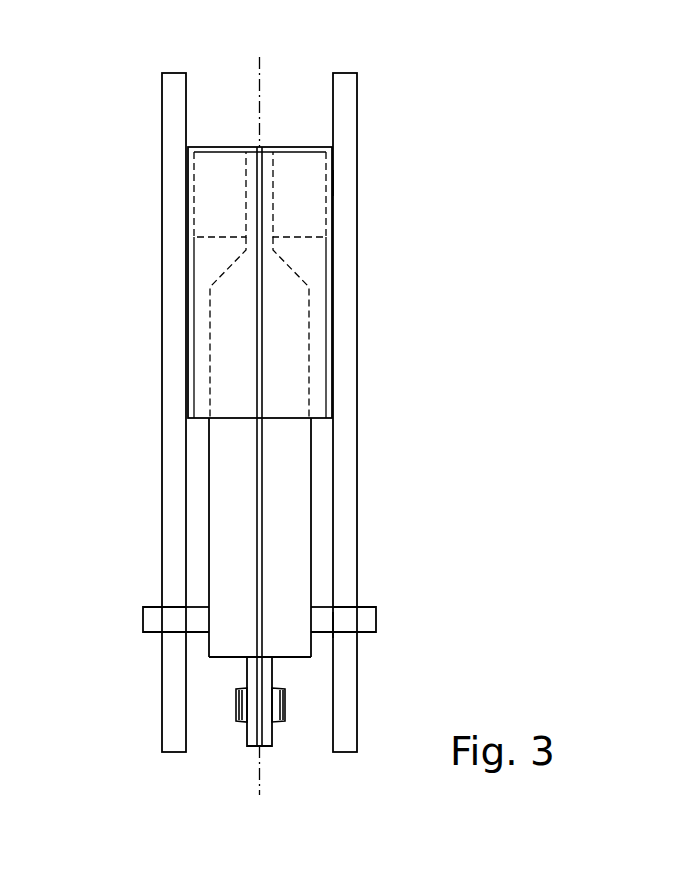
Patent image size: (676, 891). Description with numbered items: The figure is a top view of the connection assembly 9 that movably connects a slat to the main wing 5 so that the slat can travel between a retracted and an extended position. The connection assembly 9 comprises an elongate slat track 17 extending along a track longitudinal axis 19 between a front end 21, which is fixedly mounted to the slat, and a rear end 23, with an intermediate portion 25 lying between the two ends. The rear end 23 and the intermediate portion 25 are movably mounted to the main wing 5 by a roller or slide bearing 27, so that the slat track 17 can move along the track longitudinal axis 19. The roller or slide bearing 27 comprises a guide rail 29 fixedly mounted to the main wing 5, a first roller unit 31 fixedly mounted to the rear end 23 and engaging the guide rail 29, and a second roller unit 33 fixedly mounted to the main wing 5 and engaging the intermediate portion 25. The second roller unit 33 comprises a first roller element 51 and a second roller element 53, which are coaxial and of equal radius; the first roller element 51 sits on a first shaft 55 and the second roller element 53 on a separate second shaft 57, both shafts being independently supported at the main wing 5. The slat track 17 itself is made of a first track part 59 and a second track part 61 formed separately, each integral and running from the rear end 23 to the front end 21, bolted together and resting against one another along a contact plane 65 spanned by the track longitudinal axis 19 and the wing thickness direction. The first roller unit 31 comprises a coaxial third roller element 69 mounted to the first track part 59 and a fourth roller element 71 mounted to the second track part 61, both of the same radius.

The connection assembly 9 is at (385, 113).
The main wing 5 is at (348, 441).
The slat track 17 is at (224, 477).
The track longitudinal axis 19 is at (316, 741).
The front end 21 is at (297, 648).
The rear end 23 is at (256, 150).
The intermediate portion 25 is at (294, 478).
The roller or slide bearing 27 is at (414, 412).
The guide rail 29 is at (311, 263).
The first roller unit 31 is at (334, 183).
The second roller unit 33 is at (322, 625).
The first roller element 51 is at (313, 604).
The second roller element 53 is at (208, 605).
The first shaft 55 is at (365, 618).
The second shaft 57 is at (150, 620).
The first track part 59 is at (294, 543).
The second track part 61 is at (228, 536).
The contact plane 65 is at (259, 778).
The third roller element 69 is at (297, 170).
The fourth roller element 71 is at (213, 173).